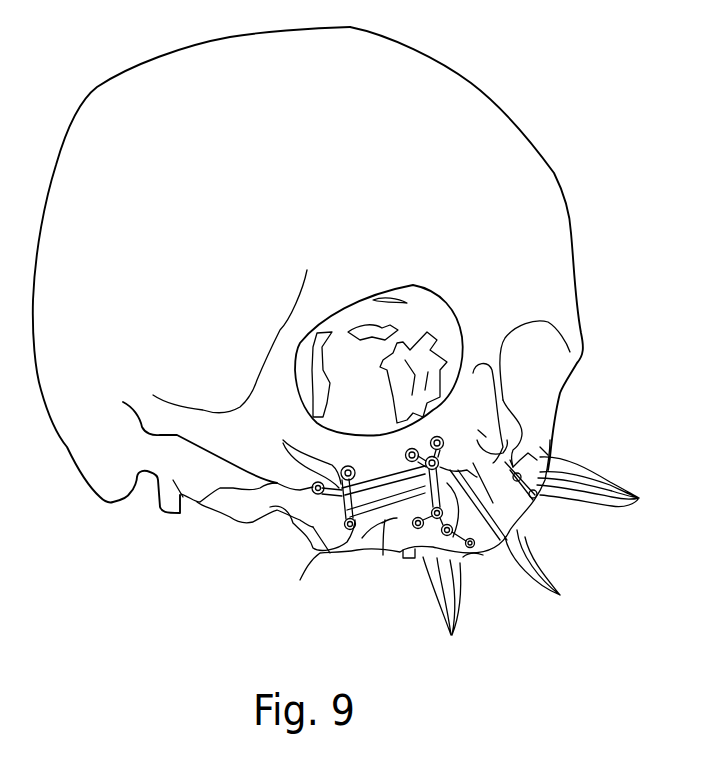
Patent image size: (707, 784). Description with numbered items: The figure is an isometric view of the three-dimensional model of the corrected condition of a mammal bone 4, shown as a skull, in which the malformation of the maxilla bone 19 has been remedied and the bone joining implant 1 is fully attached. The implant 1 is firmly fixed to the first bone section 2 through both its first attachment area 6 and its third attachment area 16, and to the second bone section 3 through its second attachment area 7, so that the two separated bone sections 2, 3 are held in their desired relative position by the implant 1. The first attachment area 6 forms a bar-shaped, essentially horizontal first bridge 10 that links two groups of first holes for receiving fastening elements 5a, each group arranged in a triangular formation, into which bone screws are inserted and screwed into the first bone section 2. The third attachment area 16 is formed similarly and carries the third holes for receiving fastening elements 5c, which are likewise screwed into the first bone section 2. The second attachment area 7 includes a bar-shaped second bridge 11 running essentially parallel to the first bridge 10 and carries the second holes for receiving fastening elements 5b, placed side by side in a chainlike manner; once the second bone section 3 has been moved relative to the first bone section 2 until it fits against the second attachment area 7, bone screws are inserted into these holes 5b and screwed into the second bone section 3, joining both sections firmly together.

The bone joining implant 1 is at (556, 531).
The first bone section 2 is at (292, 470).
The second bone section 3 is at (362, 538).
The mammal bone 4 is at (540, 255).
The first holes for receiving fastening elements 5a is at (428, 512).
The second holes for receiving fastening elements 5b is at (313, 527).
The third holes for receiving fastening elements 5c is at (605, 482).
The first attachment area 6 is at (360, 454).
The second attachment area 7 is at (470, 568).
The first bridge 10 is at (385, 520).
The second bridge 11 is at (382, 523).
The third attachment area 16 is at (559, 444).
The maxilla bone 19 is at (477, 428).